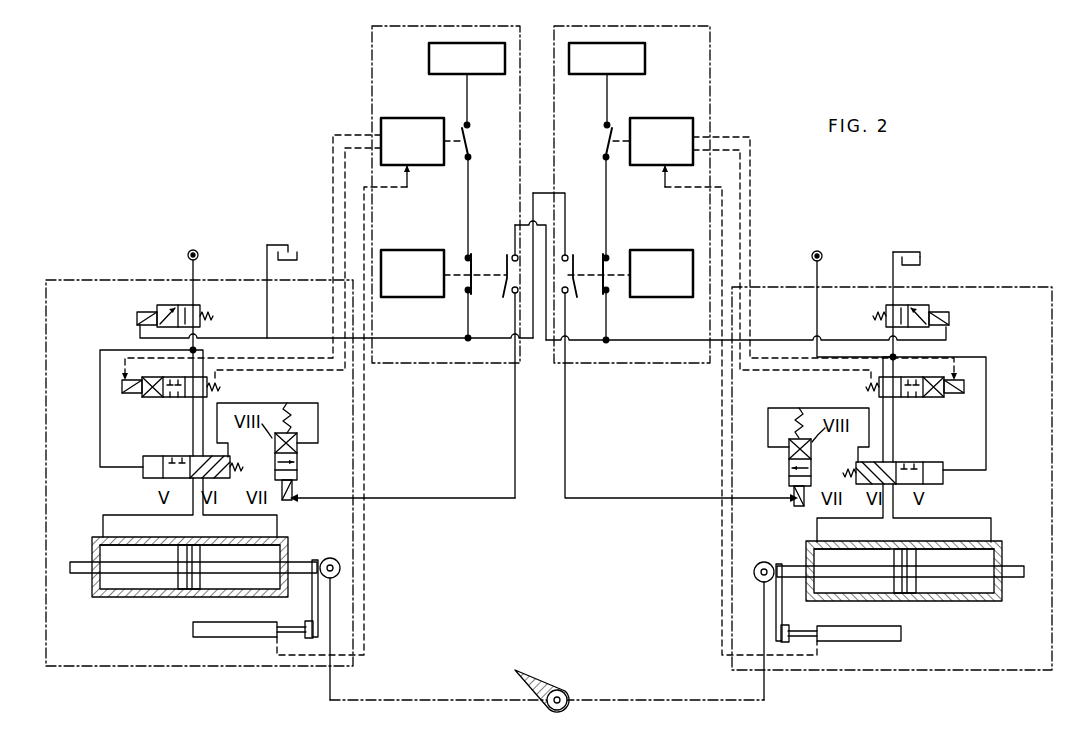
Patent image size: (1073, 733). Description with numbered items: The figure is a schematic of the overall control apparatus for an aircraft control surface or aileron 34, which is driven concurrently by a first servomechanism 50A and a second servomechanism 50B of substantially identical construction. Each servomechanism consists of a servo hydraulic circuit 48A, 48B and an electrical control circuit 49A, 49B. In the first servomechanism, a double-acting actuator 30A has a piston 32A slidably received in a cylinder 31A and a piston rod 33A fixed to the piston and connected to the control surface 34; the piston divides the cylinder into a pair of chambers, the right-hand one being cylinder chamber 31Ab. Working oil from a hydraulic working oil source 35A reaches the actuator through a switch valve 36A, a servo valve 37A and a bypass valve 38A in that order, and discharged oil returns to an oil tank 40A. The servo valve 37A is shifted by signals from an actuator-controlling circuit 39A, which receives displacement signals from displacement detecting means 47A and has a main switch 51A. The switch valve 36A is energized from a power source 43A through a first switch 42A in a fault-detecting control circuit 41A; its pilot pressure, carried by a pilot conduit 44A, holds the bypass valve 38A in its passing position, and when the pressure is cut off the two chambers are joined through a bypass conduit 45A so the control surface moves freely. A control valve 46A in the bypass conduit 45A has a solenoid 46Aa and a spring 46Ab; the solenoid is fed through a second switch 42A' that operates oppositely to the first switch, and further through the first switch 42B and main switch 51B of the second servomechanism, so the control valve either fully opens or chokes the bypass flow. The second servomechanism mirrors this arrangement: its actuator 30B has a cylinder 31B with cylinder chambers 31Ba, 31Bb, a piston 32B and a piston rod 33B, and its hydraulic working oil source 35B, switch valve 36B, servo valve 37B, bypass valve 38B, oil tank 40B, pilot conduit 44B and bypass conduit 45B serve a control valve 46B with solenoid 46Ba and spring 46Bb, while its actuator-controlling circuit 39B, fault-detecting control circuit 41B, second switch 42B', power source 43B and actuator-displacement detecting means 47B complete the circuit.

The double-acting actuator 30A is at (100, 604).
The double-acting actuator 30B is at (1006, 599).
The cylinder 31A is at (240, 597).
The hydraulic cylinder 31B is at (832, 551).
The cylinder chamber 31Ab is at (245, 555).
The cylinder chamber 31Ba is at (840, 592).
The cylinder chamber 31Bb is at (992, 630).
The piston 32A is at (188, 597).
The piston 32B is at (900, 600).
The piston rod 33A is at (80, 560).
The piston rod 33B is at (1020, 566).
The control surface 34 is at (553, 683).
The hydraulic working oil source 35A is at (188, 252).
The pressure source 35B is at (813, 253).
The switch valve 36A is at (158, 308).
The switch valve 36B is at (932, 312).
The servo valve 37A is at (175, 398).
The servo valve 37B is at (918, 401).
The bypass valve 38A is at (151, 457).
The bypass valve 38B is at (924, 463).
The actuator-controlling circuit 39A is at (430, 151).
The actuator-controlling circuit 39B is at (679, 151).
The oil tank 40A is at (290, 250).
The tank 40B is at (921, 259).
The fault-detecting control circuit 41A is at (430, 283).
The fault-detecting control circuit 41B is at (679, 283).
The first switch 42A is at (446, 283).
The first switch 42B is at (626, 284).
The second switch 42A' is at (497, 361).
The switch contact 42B' is at (584, 290).
The power source 43A is at (450, 69).
The power source 43B is at (590, 69).
The pilot conduit 44A is at (100, 377).
The hydraulic circuit 44B is at (986, 360).
The bypass conduit 45A is at (306, 403).
The pilot circuit 45B is at (768, 412).
The control valve 46A is at (297, 464).
The control valve 46B is at (789, 467).
The solenoid 46Aa is at (290, 502).
The solenoid 46Ba is at (799, 508).
The spring 46Ab is at (287, 410).
The valve spring 46Bb is at (800, 420).
The displacement detecting means 47A is at (205, 640).
The actuator-displacement detecting means 47B is at (889, 645).
The servo hydraulic circuit 48A is at (112, 280).
The hydraulic unit 48B is at (1045, 287).
The electrical control circuit 49A is at (372, 63).
The electric control unit 49B is at (710, 70).
The first servomechanism 50A is at (262, 204).
The second servomechanism 50B is at (836, 231).
The main switch 51A is at (470, 140).
The main switch 51B is at (604, 140).